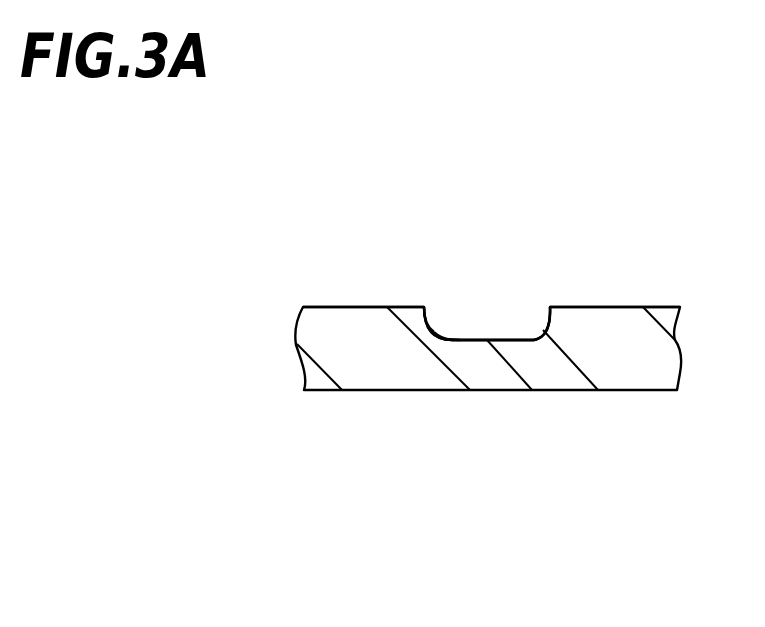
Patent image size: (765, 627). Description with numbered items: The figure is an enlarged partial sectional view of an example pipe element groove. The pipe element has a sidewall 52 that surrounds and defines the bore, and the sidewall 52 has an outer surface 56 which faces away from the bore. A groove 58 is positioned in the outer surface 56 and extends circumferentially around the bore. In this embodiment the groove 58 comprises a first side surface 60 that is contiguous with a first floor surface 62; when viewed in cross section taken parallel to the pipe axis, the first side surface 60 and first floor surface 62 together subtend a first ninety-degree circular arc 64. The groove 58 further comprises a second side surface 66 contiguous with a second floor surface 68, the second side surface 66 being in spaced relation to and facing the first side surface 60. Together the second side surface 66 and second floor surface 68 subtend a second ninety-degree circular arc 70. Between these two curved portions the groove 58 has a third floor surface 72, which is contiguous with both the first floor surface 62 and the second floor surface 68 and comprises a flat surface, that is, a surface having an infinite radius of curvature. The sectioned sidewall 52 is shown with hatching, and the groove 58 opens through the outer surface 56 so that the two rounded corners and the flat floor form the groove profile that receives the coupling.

The sidewall 52 is at (310, 322).
The outer surface 56 is at (357, 305).
The groove 58 is at (489, 305).
The first side surface 60 is at (434, 308).
The first floor surface 62 is at (449, 342).
The first 90° circular arc 64 is at (448, 334).
The second side surface 66 is at (547, 315).
The second floor surface 68 is at (544, 328).
The second 90° circular arc 70 is at (543, 327).
The third floor surface 72 is at (505, 340).